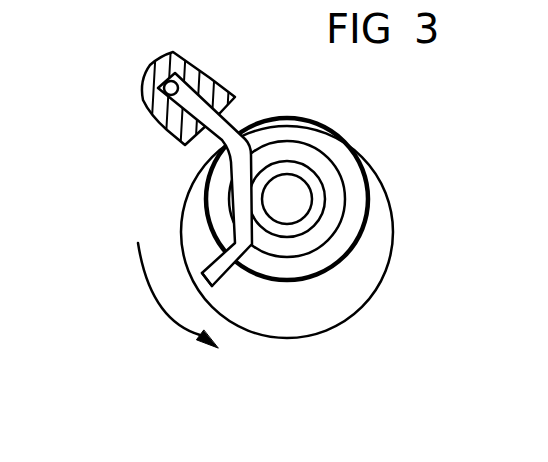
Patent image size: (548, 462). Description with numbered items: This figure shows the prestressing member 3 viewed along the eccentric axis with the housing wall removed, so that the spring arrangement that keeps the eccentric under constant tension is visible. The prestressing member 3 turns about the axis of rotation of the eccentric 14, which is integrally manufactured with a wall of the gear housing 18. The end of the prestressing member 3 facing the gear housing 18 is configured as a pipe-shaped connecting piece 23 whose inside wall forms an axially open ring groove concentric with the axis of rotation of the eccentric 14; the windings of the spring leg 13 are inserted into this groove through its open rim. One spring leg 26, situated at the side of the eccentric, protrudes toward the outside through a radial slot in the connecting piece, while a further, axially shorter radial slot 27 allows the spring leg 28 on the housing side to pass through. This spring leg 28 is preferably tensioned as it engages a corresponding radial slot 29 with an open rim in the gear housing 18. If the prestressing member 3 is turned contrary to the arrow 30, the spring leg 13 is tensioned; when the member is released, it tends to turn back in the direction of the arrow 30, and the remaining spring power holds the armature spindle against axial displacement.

The prestressing member 3 is at (373, 248).
The spring leg 13 is at (337, 193).
The axis of rotation of the eccentric 14 is at (304, 190).
The gear housing 18 is at (155, 107).
The pipe-shaped connecting piece 23 is at (313, 133).
The spring leg 26 is at (221, 268).
The radial slot 27 is at (265, 117).
The spring leg 28 is at (217, 135).
The radial slot 29 is at (191, 128).
The arrow 30 is at (160, 299).